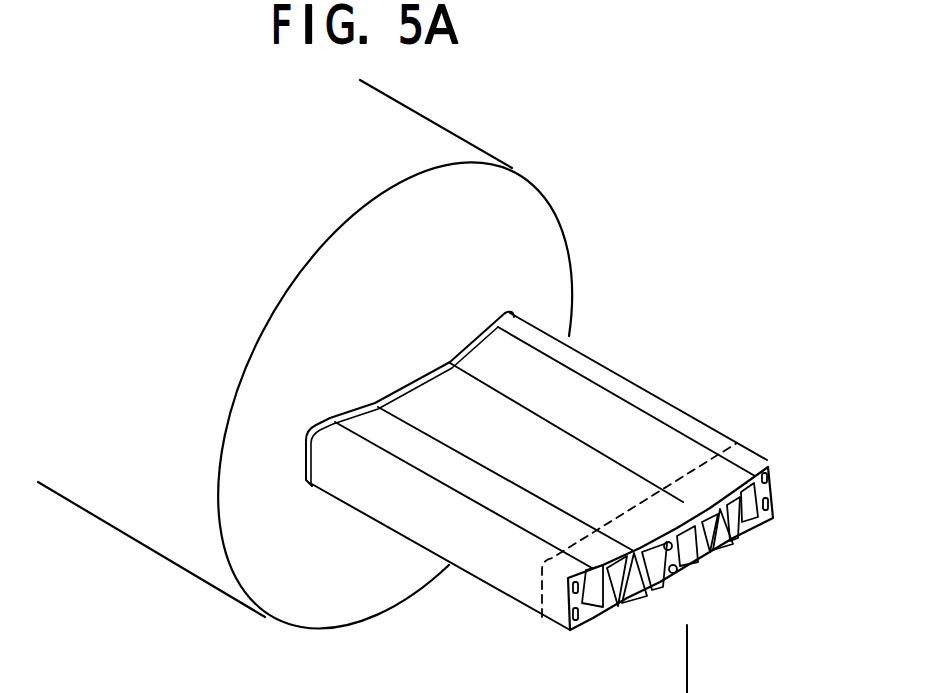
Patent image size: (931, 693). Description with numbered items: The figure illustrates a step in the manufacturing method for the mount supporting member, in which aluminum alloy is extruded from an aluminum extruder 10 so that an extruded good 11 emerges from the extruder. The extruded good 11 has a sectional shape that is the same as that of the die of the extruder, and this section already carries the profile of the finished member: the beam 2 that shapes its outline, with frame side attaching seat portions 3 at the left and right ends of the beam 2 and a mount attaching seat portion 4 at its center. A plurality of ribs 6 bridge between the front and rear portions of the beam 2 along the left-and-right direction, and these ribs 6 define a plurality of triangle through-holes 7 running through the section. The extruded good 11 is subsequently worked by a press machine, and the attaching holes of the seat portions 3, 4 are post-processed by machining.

The beam 2 is at (730, 482).
The frame side attaching seat portion 3 is at (773, 488).
The mount attaching seat portion 4 is at (716, 522).
The ribs 6 is at (640, 603).
The triangle through-holes 7 is at (732, 659).
The aluminum extruder 10 is at (428, 132).
The extruded good 11 is at (677, 528).